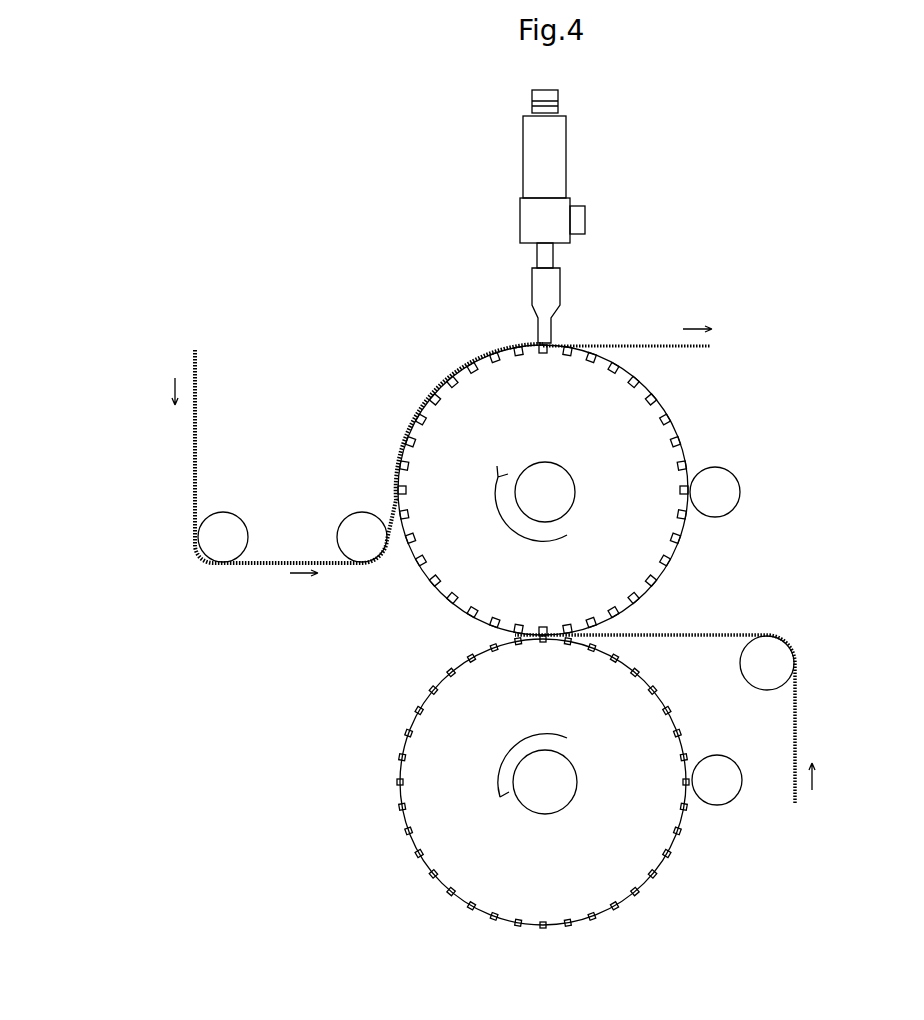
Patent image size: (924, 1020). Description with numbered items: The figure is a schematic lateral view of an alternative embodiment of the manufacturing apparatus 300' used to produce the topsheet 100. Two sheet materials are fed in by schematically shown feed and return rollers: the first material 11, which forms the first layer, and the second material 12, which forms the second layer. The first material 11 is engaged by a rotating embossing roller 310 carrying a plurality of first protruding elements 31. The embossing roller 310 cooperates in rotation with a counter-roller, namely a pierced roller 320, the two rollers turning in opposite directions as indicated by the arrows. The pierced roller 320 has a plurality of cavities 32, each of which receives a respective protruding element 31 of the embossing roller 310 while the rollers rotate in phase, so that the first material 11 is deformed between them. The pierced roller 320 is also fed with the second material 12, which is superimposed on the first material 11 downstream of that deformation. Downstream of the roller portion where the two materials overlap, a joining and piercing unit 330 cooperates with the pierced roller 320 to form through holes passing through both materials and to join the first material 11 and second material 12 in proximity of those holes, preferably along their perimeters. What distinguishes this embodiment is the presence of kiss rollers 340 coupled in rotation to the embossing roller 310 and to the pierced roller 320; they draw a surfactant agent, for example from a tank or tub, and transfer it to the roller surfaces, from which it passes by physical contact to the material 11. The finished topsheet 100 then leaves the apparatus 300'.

The manufacturing apparatus 300' is at (864, 198).
The joining and piercing unit 330 is at (522, 213).
The cavities 32 is at (677, 443).
The pierced roller 320 is at (675, 553).
The first protruding elements 31 is at (417, 853).
The embossing roller 310 is at (648, 878).
The kiss rollers 340 is at (742, 502).
The second material 12 is at (258, 564).
The topsheet 100 is at (643, 347).
The first material 11 is at (793, 800).